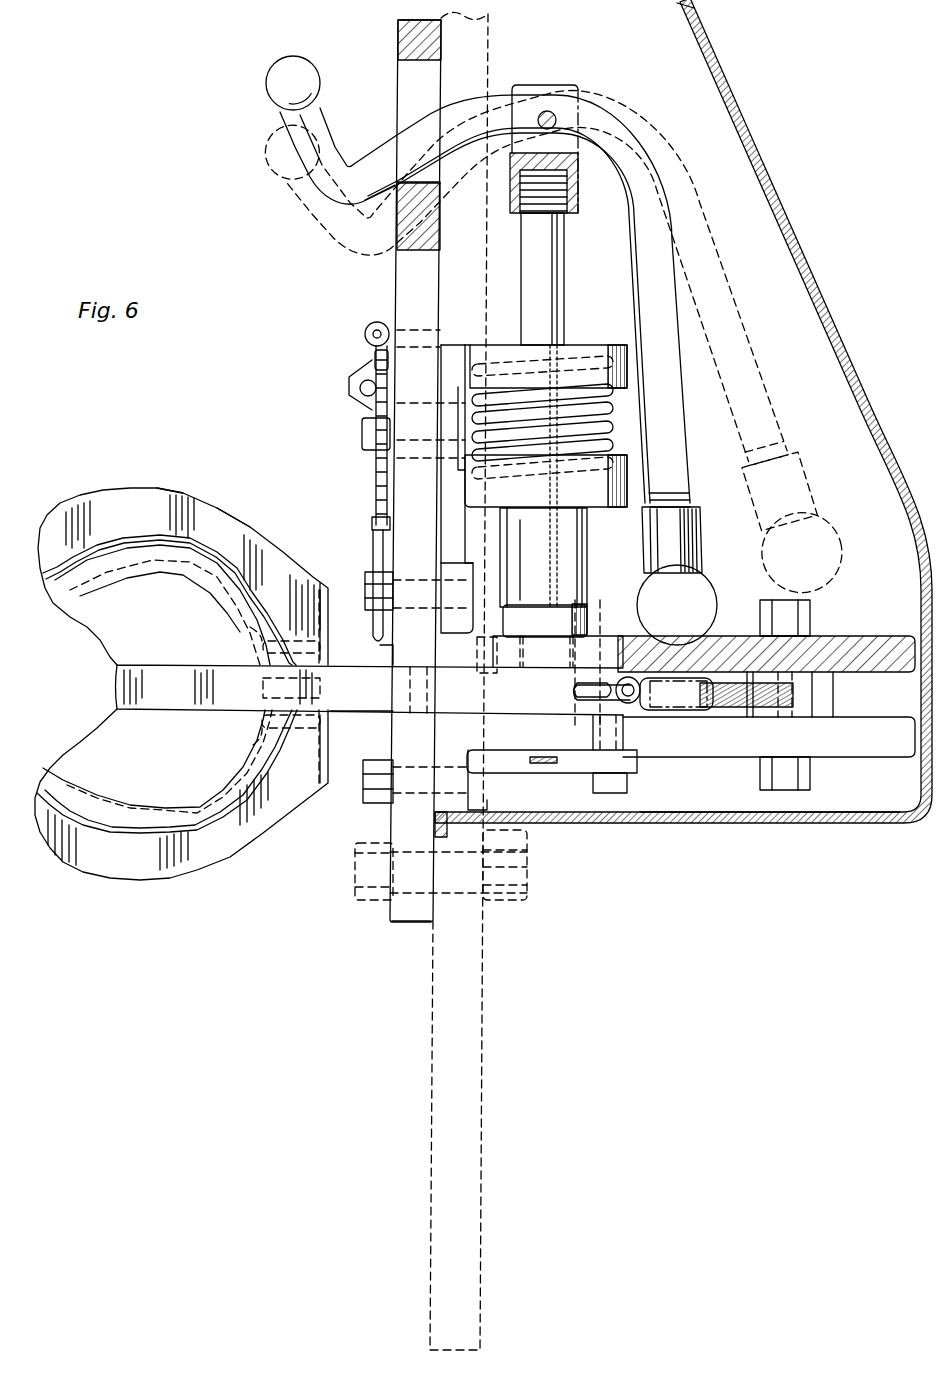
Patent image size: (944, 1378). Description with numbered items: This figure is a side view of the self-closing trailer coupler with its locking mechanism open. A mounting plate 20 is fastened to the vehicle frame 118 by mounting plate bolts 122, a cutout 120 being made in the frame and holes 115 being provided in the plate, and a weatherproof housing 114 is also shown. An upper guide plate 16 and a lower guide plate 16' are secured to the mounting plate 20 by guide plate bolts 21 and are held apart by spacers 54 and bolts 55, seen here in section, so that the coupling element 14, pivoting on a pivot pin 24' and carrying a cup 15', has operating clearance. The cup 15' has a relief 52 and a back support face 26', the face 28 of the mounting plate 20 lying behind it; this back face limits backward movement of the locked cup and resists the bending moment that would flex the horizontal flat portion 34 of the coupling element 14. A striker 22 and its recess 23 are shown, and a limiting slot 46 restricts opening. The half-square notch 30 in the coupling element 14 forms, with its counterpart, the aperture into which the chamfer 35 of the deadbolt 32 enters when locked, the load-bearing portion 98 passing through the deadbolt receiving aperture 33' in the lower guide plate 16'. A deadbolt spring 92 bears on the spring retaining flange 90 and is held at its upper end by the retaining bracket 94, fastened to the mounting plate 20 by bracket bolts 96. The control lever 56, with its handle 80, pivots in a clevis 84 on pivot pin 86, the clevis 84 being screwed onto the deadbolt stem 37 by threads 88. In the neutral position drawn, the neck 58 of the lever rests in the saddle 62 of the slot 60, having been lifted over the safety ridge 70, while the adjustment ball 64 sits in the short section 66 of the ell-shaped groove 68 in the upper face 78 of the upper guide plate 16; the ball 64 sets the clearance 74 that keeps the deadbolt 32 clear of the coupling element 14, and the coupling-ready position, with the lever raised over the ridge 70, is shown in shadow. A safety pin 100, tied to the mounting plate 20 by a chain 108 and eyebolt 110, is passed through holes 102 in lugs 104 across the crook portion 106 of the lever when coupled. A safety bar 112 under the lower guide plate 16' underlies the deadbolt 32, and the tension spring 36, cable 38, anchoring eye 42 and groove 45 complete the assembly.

The coupling element 14 is at (261, 528).
The cup 15' is at (192, 483).
The upper guide plate 16 is at (458, 489).
The lower guide plate 16' is at (481, 793).
The mounting plate 20 is at (397, 44).
The guide plate bolts 21 is at (367, 578).
The striker 22 is at (263, 653).
The recess for striker 23 is at (250, 630).
The pivot pin 24' is at (567, 608).
The back face of cup 26' is at (347, 686).
The face of mounting plate 28 is at (393, 656).
The half-square notch 30 is at (426, 650).
The deadbolt 32 is at (586, 563).
The deadbolt receiving aperture 33' is at (532, 665).
The flat portion of coupling element 34 is at (487, 643).
The deadbolt chamfer 35 is at (592, 628).
The tension spring 36 is at (670, 710).
The deadbolt stem 37 is at (566, 235).
The cable 38 is at (735, 713).
The anchoring eye 42 is at (633, 715).
The groove 45 is at (790, 710).
The coupling element limiting slot 46 is at (397, 727).
The relief in cup 52 is at (100, 640).
The spacer 54 is at (836, 700).
The bolt 55 is at (820, 617).
The control lever 56 is at (249, 194).
The neck of control lever 58 is at (397, 208).
The slot in mounting plate 60 is at (414, 458).
The saddle portion of slot 62 is at (428, 201).
The ball on control lever 64 is at (705, 562).
The short section of ell-shaped groove 66 is at (713, 640).
The ell-shaped groove 68 is at (867, 640).
The safety ridge 70 is at (431, 110).
The deadbolt clearance 74 is at (558, 670).
The upper face of guide plate 78 is at (922, 640).
The handle 80 is at (266, 81).
The clevis 84 is at (553, 86).
The pivot pin in clevis 86 is at (554, 117).
The fastening thread for clevis 88 is at (567, 198).
The spring retaining flange 90 is at (600, 510).
The deadbolt spring 92 is at (600, 417).
The deadbolt spring retaining bracket 94 is at (612, 343).
The bracket bolt 96 is at (362, 437).
The load-bearing portion of deadbolt 98 is at (560, 596).
The safety pin 100 is at (377, 547).
The hole in lug 102 is at (360, 388).
The lug 104 is at (375, 357).
The crook portion of control lever 106 is at (378, 133).
The chain 108 is at (372, 472).
The eyebolt 110 is at (377, 323).
The safety bar 112 is at (636, 772).
The weatherproof housing 114 is at (833, 824).
The holes in mounting plate 115 is at (395, 922).
The vehicle frame 118 is at (484, 946).
The cutout in vehicle frame 120 is at (512, 841).
The mounting plate bolts 122 is at (357, 869).